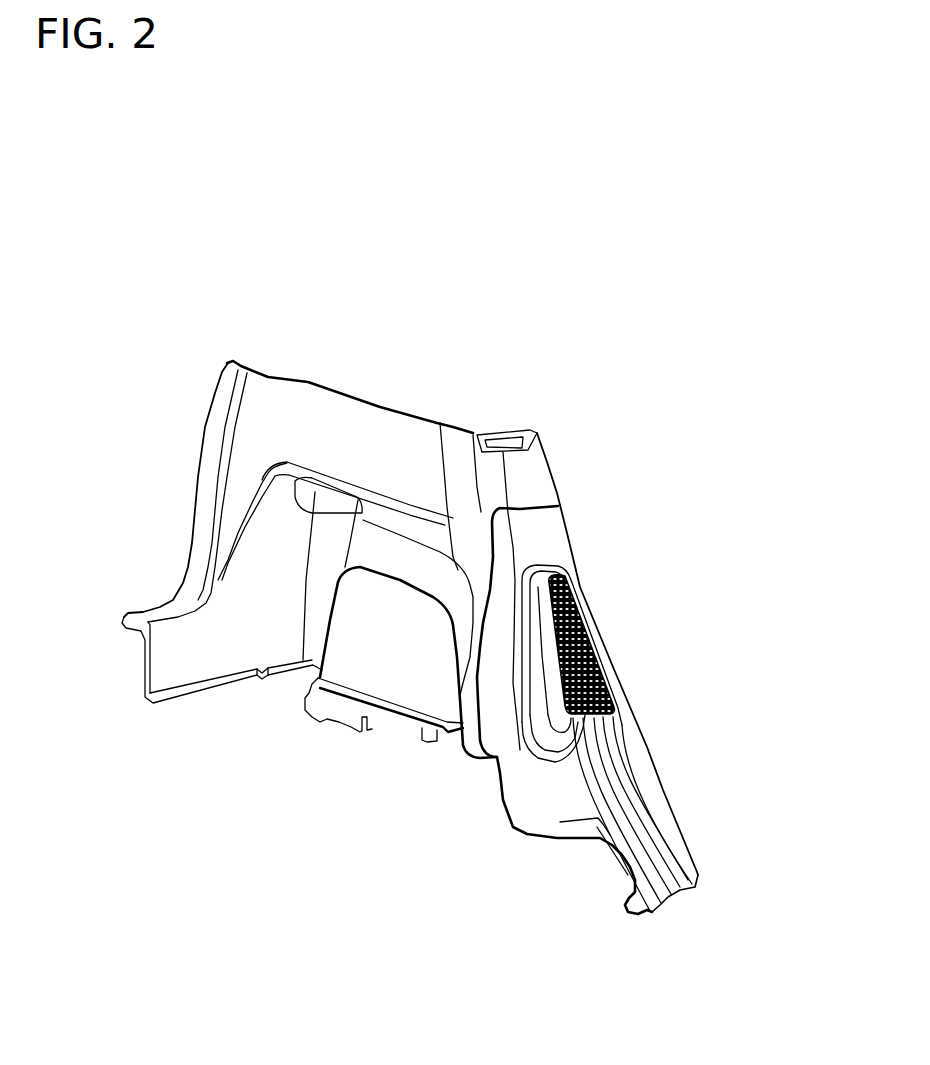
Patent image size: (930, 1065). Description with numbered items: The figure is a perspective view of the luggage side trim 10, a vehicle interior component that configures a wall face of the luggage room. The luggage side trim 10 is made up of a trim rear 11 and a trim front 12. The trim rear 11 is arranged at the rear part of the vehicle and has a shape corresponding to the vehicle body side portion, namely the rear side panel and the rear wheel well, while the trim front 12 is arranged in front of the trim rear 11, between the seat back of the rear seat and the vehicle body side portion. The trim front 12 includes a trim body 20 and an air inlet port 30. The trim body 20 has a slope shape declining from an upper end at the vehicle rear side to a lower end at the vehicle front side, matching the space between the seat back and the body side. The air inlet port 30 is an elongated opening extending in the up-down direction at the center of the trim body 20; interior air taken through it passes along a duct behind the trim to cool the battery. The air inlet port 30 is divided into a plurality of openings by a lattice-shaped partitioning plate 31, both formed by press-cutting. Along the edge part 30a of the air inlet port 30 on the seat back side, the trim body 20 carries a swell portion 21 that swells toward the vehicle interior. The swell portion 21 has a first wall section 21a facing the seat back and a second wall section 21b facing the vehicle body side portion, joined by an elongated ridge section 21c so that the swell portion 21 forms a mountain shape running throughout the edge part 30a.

The luggage side trim 10 is at (452, 350).
The trim rear 11 is at (312, 379).
The trim front 12 is at (688, 822).
The trim body 20 is at (641, 770).
The swell portion 21 is at (540, 712).
The first wall section 21a is at (537, 655).
The second wall section 21b is at (580, 736).
The ridge section 21c is at (548, 678).
The air inlet port 30 is at (605, 688).
The edge part 30a is at (537, 570).
The partitioning plate 31 is at (580, 627).